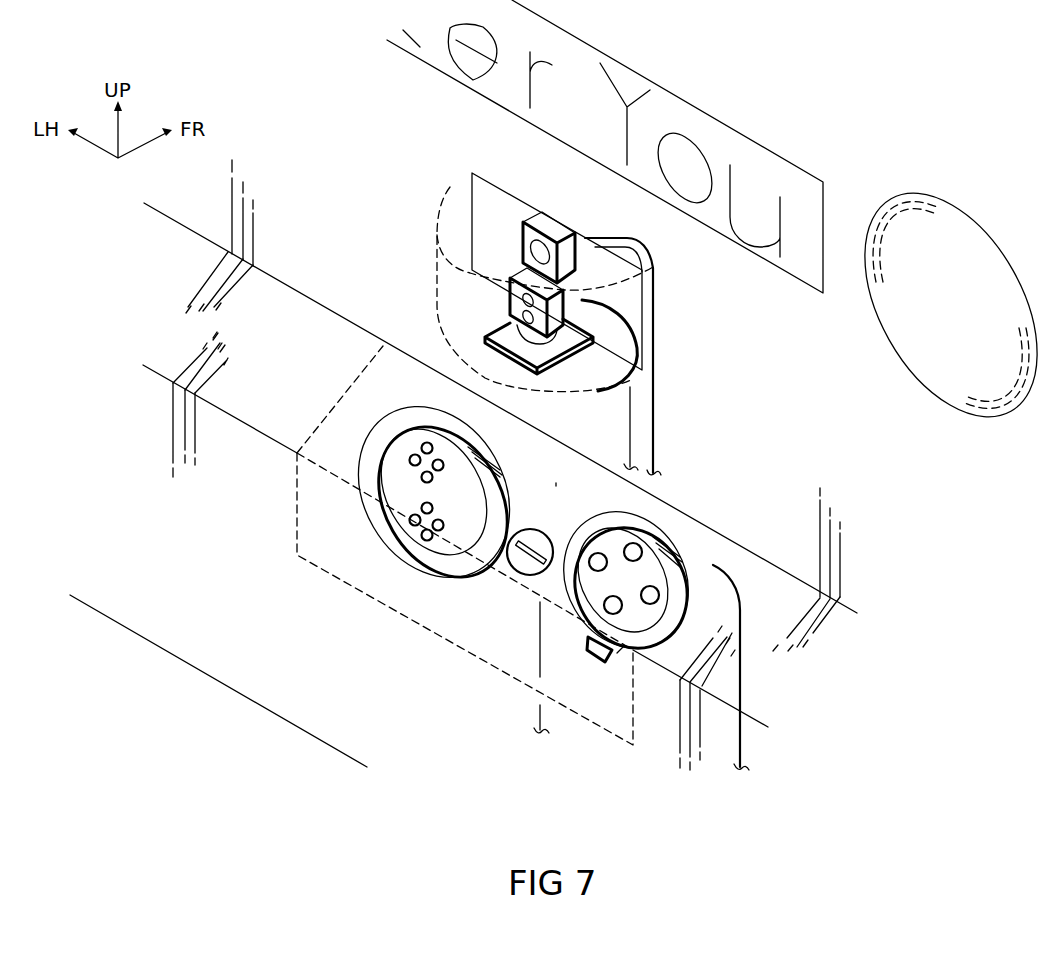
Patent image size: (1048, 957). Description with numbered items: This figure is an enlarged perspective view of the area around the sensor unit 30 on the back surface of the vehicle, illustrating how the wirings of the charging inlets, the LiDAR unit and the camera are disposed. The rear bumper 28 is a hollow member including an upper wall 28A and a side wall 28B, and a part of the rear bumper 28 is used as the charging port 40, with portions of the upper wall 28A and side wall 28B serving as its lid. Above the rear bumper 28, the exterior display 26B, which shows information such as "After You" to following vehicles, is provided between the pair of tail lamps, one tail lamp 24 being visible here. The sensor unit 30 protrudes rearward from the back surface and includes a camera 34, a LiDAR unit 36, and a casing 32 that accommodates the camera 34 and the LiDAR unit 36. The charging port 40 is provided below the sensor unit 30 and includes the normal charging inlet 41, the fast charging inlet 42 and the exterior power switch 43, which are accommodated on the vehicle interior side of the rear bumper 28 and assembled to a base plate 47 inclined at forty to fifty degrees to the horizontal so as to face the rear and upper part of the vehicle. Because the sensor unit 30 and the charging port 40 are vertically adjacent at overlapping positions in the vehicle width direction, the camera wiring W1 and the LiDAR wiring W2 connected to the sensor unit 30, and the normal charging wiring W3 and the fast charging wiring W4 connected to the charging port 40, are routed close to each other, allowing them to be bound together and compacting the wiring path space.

The tail lamp 24 is at (947, 270).
The exterior display 26B is at (826, 230).
The rear bumper 28 is at (280, 300).
The upper wall 28A is at (298, 349).
The side wall 28B is at (160, 603).
The sensor unit 30 is at (628, 306).
The casing 32 is at (450, 187).
The camera 34 is at (547, 230).
The LiDAR unit 36 is at (578, 372).
The charging port 40 is at (398, 379).
The normal charging inlet 41 is at (653, 563).
The fast charging inlet 42 is at (473, 491).
The exterior power switch 43 is at (530, 575).
The base plate 47 is at (556, 483).
The camera wiring W1 is at (657, 413).
The LiDAR wiring W2 is at (632, 451).
The normal charging wiring W3 is at (742, 680).
The fast charging wiring W4 is at (538, 676).